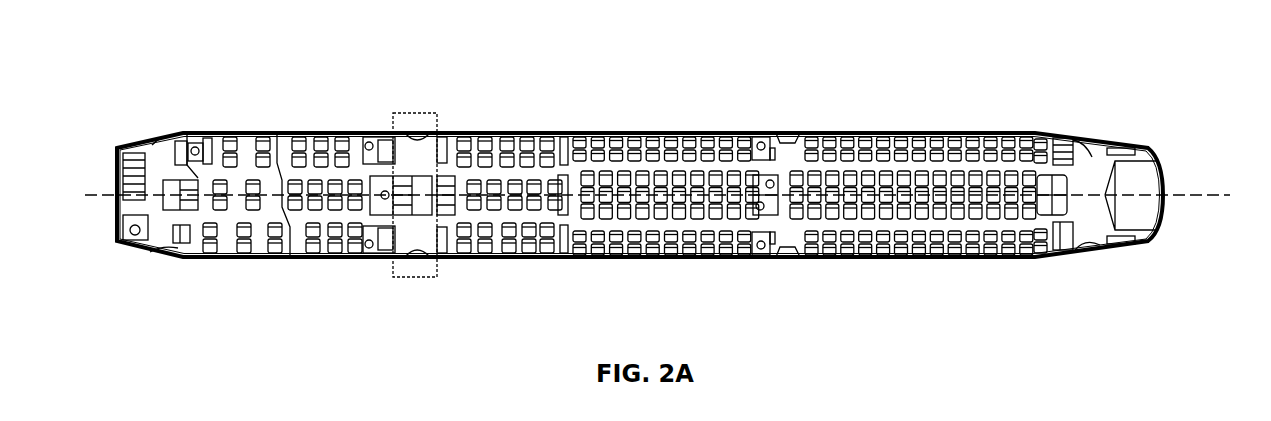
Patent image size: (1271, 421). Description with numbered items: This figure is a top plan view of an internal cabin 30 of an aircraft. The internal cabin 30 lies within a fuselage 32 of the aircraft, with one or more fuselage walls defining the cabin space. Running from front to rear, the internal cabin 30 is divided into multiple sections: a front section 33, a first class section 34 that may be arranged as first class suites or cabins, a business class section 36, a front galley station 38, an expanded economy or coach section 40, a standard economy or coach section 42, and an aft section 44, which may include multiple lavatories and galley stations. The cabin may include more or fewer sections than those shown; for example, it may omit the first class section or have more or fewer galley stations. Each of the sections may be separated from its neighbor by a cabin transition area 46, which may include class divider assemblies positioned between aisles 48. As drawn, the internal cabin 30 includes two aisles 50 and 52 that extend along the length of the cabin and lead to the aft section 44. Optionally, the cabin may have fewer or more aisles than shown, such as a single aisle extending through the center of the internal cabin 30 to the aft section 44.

The internal cabin 30 is at (240, 55).
The fuselage 32 is at (523, 105).
The front section 33 is at (172, 266).
The first class section 34 is at (250, 257).
The business class section 36 is at (313, 133).
The front galley station 38 is at (415, 270).
The expanded economy or coach section 40 is at (500, 257).
The standard economy or coach section 42 is at (612, 133).
The aft section 44 is at (1095, 157).
The cabin transition area 46 is at (180, 135).
The aisles 48 is at (400, 163).
The aisle 50 is at (920, 168).
The aisle 52 is at (935, 225).